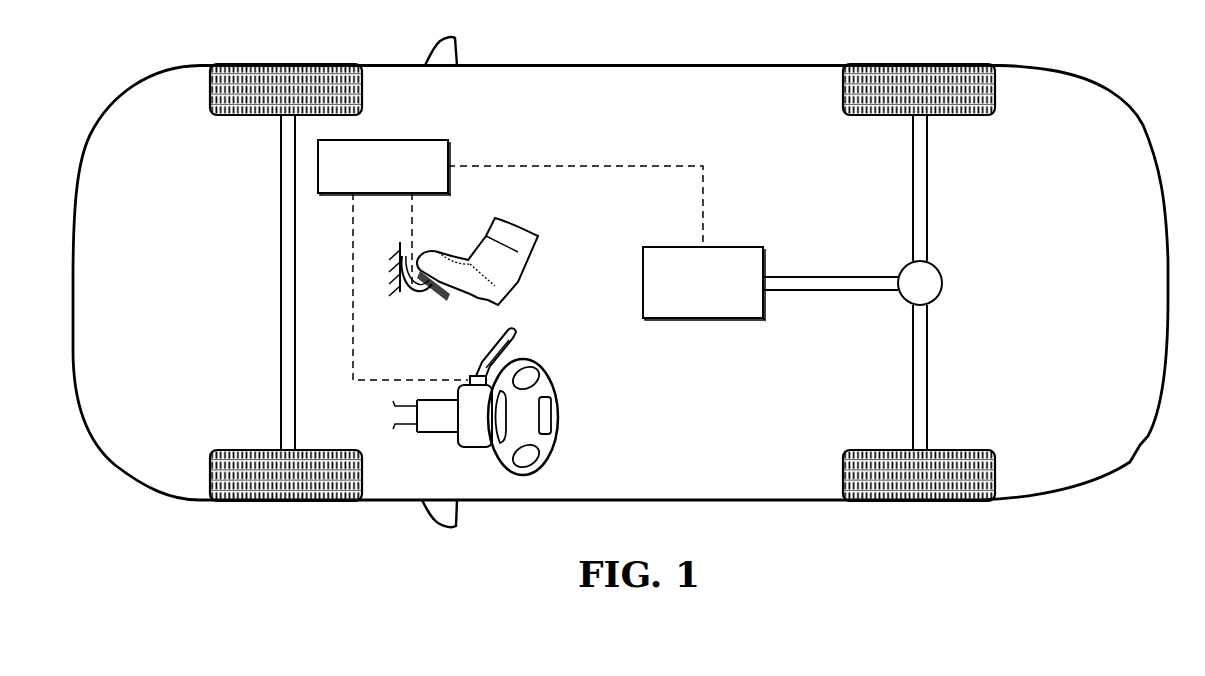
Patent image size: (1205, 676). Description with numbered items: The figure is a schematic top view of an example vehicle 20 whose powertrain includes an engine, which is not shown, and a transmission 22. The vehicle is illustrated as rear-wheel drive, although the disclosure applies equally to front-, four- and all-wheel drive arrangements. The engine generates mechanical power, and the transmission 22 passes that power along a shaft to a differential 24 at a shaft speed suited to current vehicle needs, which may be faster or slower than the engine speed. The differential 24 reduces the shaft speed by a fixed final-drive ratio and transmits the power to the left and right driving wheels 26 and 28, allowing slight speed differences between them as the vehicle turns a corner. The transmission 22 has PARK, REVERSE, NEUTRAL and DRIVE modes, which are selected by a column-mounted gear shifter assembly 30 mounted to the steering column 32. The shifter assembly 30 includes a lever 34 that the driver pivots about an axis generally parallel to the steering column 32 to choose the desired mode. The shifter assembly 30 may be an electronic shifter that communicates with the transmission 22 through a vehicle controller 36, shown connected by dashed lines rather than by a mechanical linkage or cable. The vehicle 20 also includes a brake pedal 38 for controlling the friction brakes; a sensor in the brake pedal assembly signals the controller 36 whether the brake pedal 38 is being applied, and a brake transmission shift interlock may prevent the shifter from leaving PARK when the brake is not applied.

The vehicle 20 is at (608, 66).
The transmission 22 is at (735, 247).
The differential 24 is at (973, 283).
The driving wheel 26 is at (960, 450).
The driving wheel 28 is at (960, 116).
The column-mounted gear shifter assembly 30 is at (498, 371).
The steering column 32 is at (440, 433).
The lever 34 is at (516, 342).
The vehicle controller 36 is at (383, 140).
The brake pedal 38 is at (423, 292).